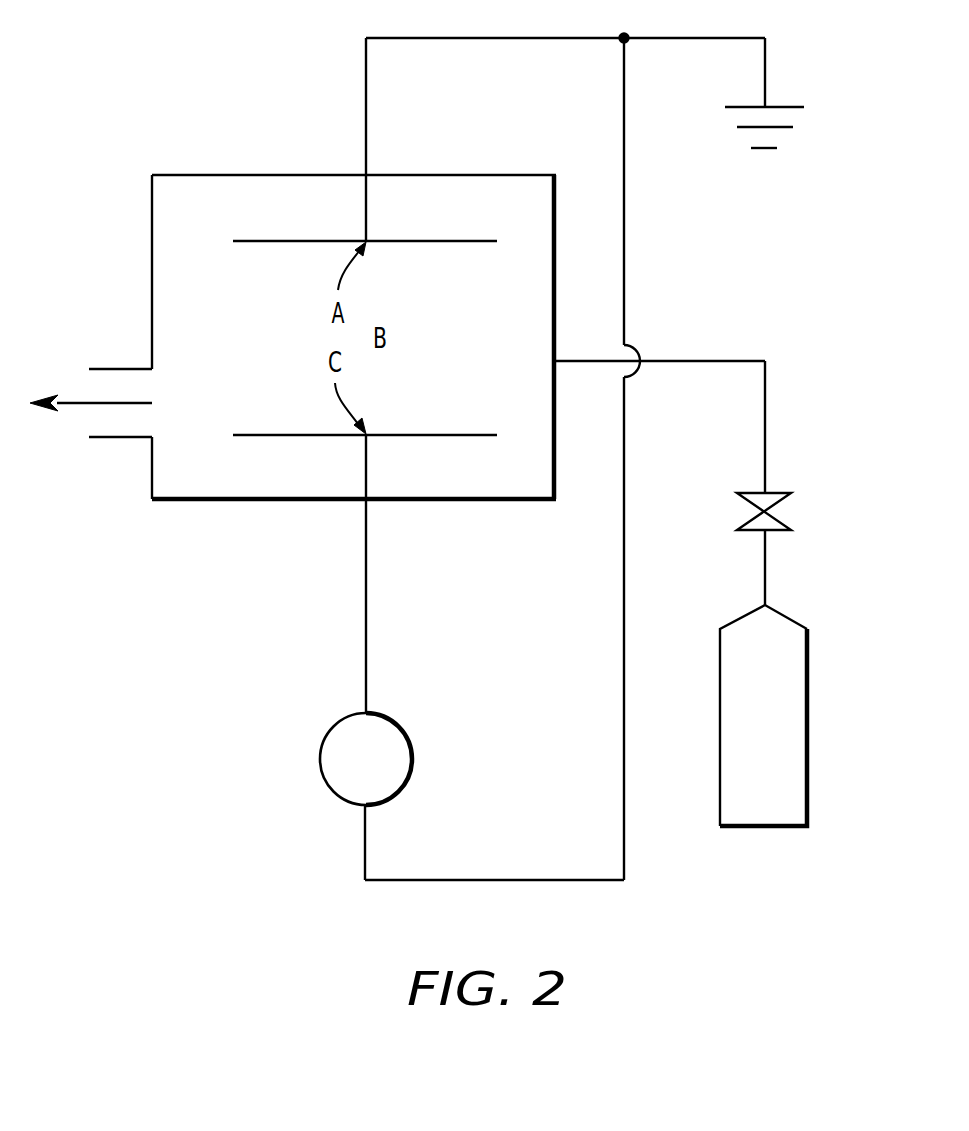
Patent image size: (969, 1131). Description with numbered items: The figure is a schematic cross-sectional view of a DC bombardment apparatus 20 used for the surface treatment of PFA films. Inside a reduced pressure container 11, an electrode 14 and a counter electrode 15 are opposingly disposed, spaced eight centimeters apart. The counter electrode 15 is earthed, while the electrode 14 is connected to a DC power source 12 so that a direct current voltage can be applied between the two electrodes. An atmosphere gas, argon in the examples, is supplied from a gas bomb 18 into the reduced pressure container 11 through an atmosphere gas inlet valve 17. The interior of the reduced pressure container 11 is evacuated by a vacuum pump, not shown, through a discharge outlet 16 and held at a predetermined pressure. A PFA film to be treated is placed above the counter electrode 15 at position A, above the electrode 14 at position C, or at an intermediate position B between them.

The reduced pressure container 11 is at (152, 221).
The DC power source 12 is at (412, 763).
The electrode 14 is at (255, 434).
The counter electrode 15 is at (260, 243).
The discharge outlet 16 is at (117, 368).
The atmosphere gas inlet valve 17 is at (785, 533).
The gas bomb 18 is at (763, 715).
The DC bombardment apparatus 20 is at (262, 126).